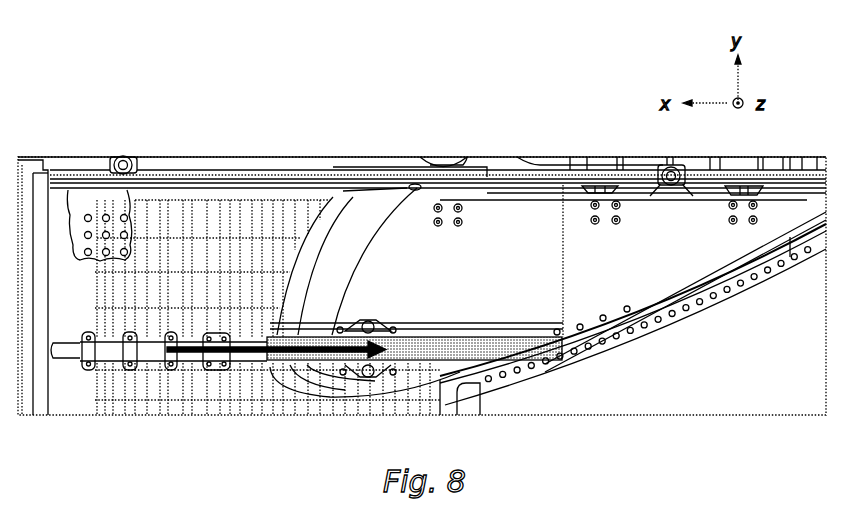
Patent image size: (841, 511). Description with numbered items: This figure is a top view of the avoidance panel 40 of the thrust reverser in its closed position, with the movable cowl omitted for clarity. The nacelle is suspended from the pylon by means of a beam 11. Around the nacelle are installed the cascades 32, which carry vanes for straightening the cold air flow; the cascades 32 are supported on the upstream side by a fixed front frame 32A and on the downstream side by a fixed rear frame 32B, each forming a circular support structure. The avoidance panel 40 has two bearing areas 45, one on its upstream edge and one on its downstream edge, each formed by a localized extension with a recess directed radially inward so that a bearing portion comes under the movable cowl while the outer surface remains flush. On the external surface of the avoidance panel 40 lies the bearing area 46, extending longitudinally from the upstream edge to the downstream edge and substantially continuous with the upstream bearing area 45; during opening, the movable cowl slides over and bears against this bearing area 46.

The beam 11 is at (260, 165).
The cascades 32 is at (229, 226).
The fixed front frame 32A is at (107, 403).
The fixed rear frame 32B is at (426, 402).
The avoidance panel 40 is at (528, 216).
The bearing areas 45 is at (273, 326).
The bearing area 46 is at (403, 350).